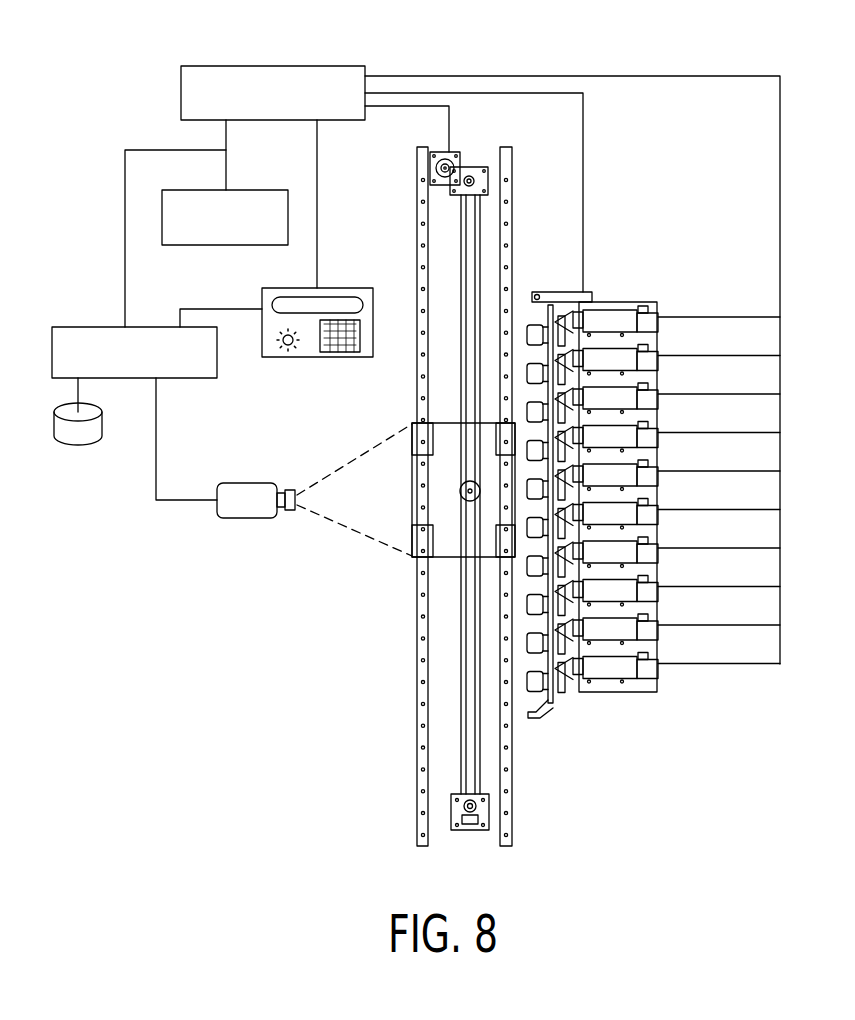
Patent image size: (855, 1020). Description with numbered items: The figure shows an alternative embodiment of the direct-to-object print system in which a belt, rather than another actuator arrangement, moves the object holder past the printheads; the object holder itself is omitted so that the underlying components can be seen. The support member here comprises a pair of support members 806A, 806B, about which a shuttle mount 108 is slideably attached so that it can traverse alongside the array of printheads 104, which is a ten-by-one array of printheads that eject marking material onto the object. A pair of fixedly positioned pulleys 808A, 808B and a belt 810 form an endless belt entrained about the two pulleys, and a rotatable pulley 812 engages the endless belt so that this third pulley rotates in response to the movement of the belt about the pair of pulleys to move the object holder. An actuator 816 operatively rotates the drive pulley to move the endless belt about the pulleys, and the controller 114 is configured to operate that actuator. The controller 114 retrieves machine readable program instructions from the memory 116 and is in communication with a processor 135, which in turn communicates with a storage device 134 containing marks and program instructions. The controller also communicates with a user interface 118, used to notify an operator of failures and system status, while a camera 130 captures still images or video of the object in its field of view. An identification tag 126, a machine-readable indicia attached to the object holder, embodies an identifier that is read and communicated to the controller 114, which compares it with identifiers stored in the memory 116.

The controller 114 is at (279, 65).
The memory 116 is at (240, 190).
The processor 135 is at (92, 326).
The storage device 134 is at (78, 448).
The camera 130 is at (248, 483).
The user interface 118 is at (312, 357).
The support member 806A is at (417, 806).
The support member 806B is at (512, 806).
The actuator 816 is at (456, 153).
The pulley 808A is at (465, 197).
The belt 810 is at (480, 245).
The pulley 808B is at (455, 794).
The shuttle mount 108 is at (448, 557).
The rotatable pulley 812 is at (460, 491).
The identification tag 126 is at (590, 292).
The array of printheads 104 is at (640, 299).